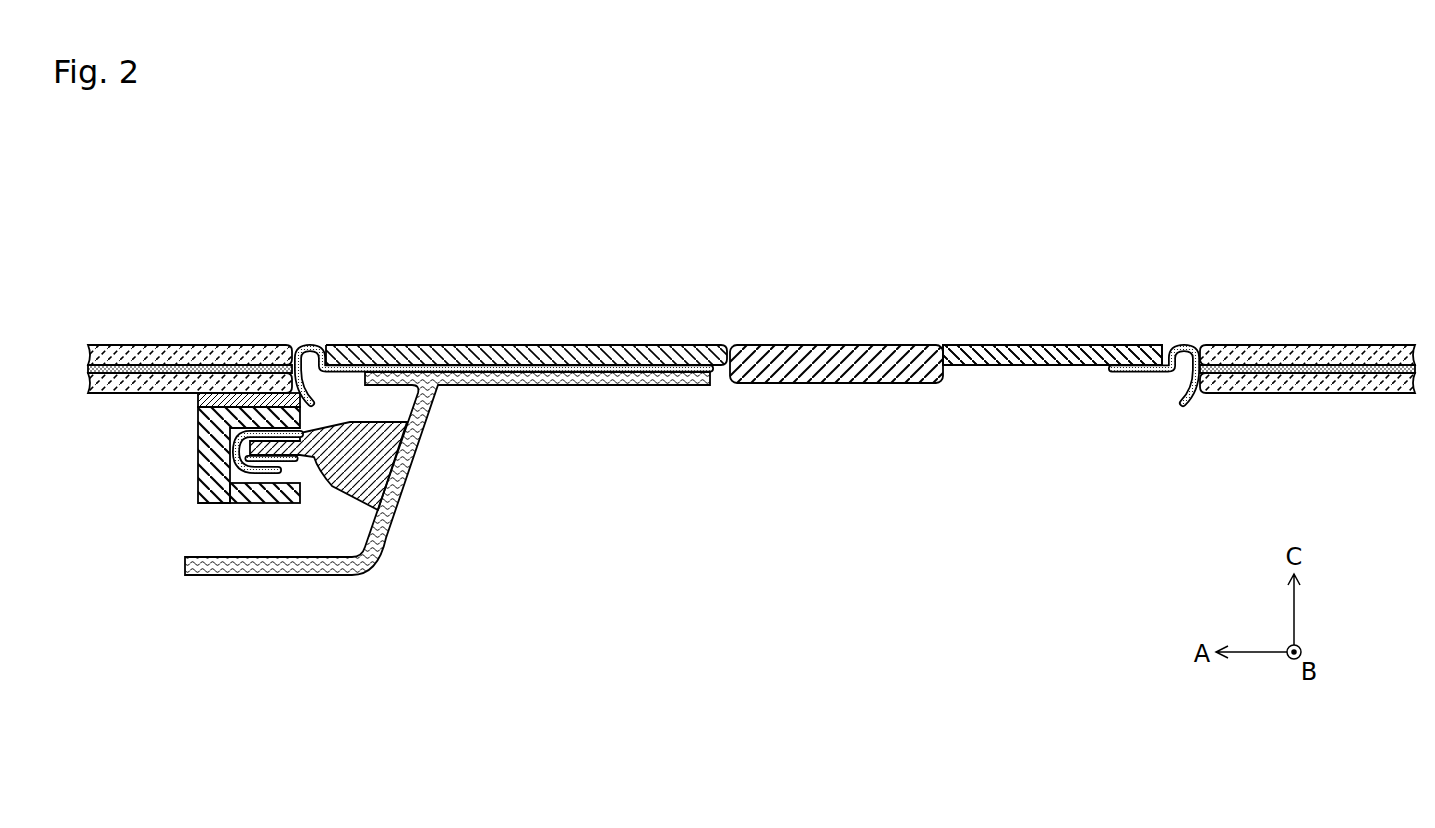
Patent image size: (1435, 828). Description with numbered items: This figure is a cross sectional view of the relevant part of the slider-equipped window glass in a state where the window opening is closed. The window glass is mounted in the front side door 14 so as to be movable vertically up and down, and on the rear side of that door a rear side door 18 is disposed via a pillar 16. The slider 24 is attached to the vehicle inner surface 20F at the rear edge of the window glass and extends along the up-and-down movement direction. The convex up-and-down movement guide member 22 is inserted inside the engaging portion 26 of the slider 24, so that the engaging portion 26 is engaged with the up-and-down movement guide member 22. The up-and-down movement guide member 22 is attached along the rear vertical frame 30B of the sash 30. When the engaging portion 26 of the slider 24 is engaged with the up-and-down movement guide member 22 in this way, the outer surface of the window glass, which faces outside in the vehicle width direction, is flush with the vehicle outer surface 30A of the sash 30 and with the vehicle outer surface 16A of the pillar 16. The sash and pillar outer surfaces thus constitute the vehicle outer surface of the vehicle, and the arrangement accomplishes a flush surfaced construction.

The front side door 14 is at (744, 269).
The pillar 16 is at (836, 330).
The vehicle outer surface of the pillar 16A is at (820, 344).
The rear side door 18 is at (1083, 269).
The vehicle inner surface of the window glass 20F is at (130, 396).
The up-and-down movement guide member 22 is at (283, 463).
The slider 24 is at (215, 471).
The engaging portion 26 is at (228, 489).
The sash 30 is at (1008, 344).
The vehicle outer surface of the sash 30A is at (511, 344).
The rear vertical frame 30B is at (646, 344).